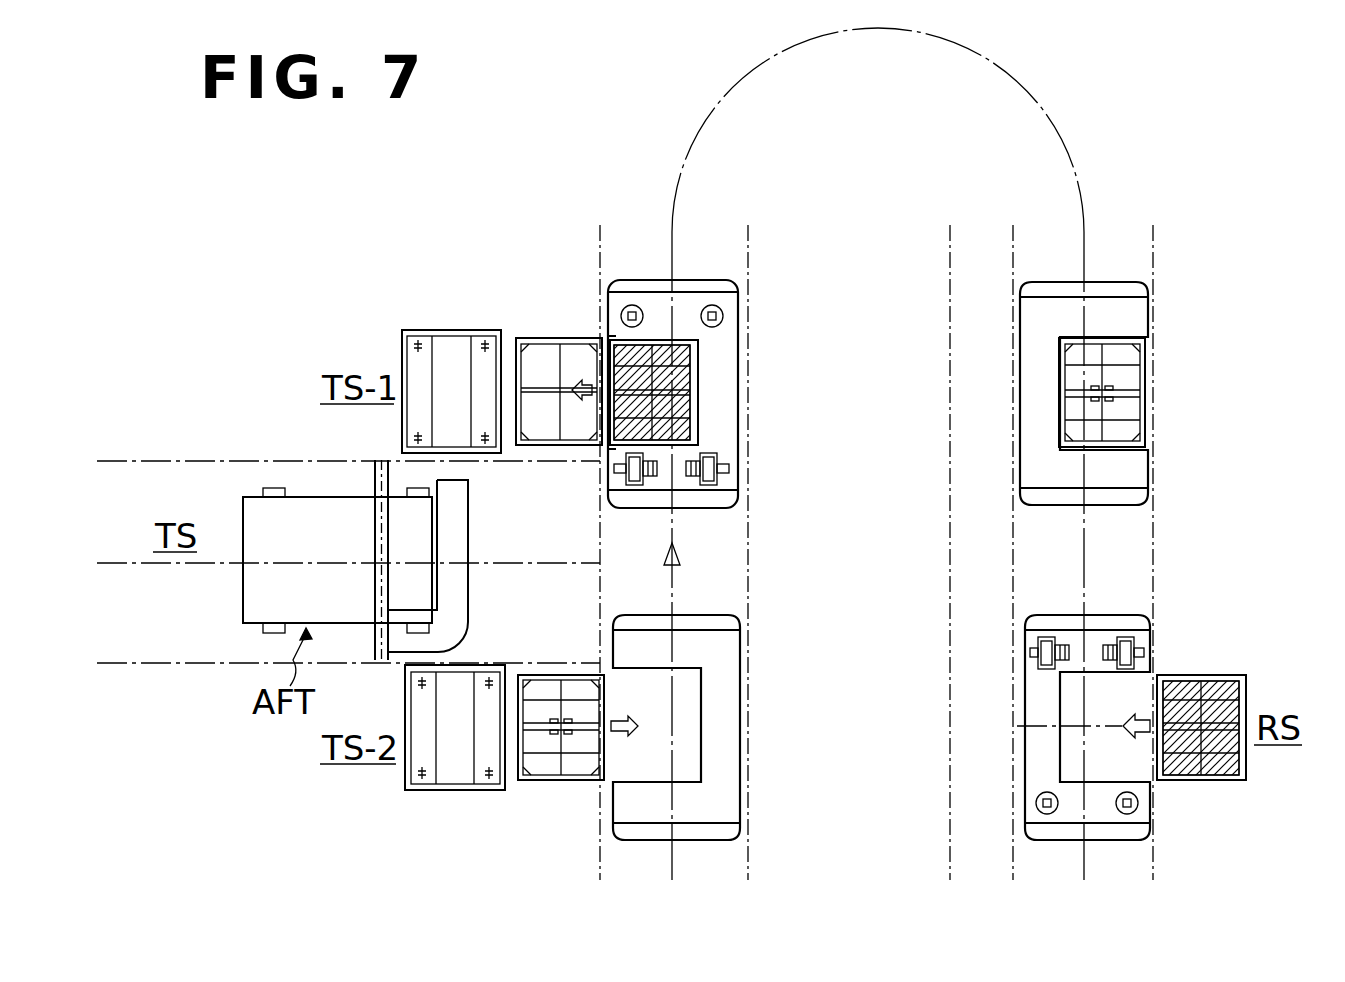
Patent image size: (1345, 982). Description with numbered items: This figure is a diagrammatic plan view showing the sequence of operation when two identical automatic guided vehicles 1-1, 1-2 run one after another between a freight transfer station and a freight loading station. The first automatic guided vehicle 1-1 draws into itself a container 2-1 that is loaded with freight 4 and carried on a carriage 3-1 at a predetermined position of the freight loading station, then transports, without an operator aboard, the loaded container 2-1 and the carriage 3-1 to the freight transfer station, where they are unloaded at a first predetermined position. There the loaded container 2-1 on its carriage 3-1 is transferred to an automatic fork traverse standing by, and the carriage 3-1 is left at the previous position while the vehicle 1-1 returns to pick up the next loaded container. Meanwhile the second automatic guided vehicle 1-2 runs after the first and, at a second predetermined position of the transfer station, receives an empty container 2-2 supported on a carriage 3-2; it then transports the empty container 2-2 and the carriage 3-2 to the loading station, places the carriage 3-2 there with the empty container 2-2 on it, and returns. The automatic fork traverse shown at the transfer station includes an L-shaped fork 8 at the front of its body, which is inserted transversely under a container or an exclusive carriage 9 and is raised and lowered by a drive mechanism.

The first automatic guided vehicle 1-1 is at (720, 352).
The second automatic guided vehicle 1-2 is at (725, 727).
The loaded container 2-1 is at (608, 340).
The empty container 2-2 is at (558, 780).
The carriage 3-1 is at (540, 447).
The carriage 3-2 is at (831, 559).
The freight 4 is at (680, 400).
The L-shaped fork 8 is at (470, 537).
The exclusive carriage 9 is at (455, 330).